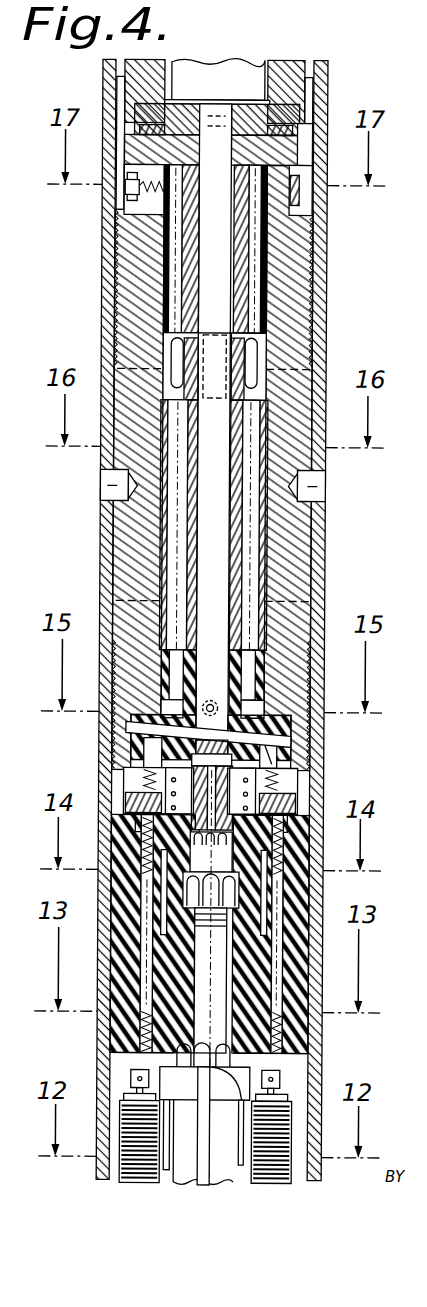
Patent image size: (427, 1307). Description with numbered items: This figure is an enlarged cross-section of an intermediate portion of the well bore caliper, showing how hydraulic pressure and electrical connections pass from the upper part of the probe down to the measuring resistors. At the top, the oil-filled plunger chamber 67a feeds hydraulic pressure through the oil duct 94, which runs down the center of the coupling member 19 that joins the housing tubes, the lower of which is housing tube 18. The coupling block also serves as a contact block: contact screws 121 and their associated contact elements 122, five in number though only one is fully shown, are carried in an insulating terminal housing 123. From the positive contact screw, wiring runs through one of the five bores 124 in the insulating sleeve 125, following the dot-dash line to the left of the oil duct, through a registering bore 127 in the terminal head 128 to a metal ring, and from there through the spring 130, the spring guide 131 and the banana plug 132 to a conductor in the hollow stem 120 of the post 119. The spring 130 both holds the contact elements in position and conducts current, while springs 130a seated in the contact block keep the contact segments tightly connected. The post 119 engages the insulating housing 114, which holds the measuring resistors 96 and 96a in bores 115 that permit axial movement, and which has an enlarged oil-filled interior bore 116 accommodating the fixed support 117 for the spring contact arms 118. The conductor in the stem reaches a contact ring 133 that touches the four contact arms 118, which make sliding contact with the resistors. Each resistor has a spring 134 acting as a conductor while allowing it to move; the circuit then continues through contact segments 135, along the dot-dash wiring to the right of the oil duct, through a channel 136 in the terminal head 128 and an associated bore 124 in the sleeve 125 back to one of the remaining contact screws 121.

The plunger chamber 67a is at (242, 72).
The oil duct 94 is at (230, 160).
The coupling member 19 is at (300, 236).
The contact screws 121 is at (128, 190).
The contact elements 122 is at (176, 206).
The insulating terminal housing 123 is at (262, 286).
The bores 124 is at (176, 512).
The insulating sleeve 125 is at (165, 555).
The registering bores 127 is at (172, 708).
The terminal head 128 is at (148, 748).
The channel 136 is at (318, 736).
The housing tube 18 is at (318, 758).
The springs 130a is at (305, 778).
The contact segments 135 is at (310, 800).
The banana plug 132 is at (128, 814).
The spring 130 is at (160, 836).
The spring guide 131 is at (138, 852).
The hollow stem 120 is at (322, 906).
The housing 114 is at (146, 957).
The spring 134 is at (146, 1045).
The post 119 is at (290, 1040).
The interior bore 116 is at (148, 1075).
The bores 115 is at (292, 1135).
The contact ring 133 is at (205, 1072).
The spring contact arms 118 is at (172, 1172).
The fixed support 117 is at (238, 1175).
The measuring resistor 96 is at (135, 1180).
The measuring resistor 96a is at (290, 1182).